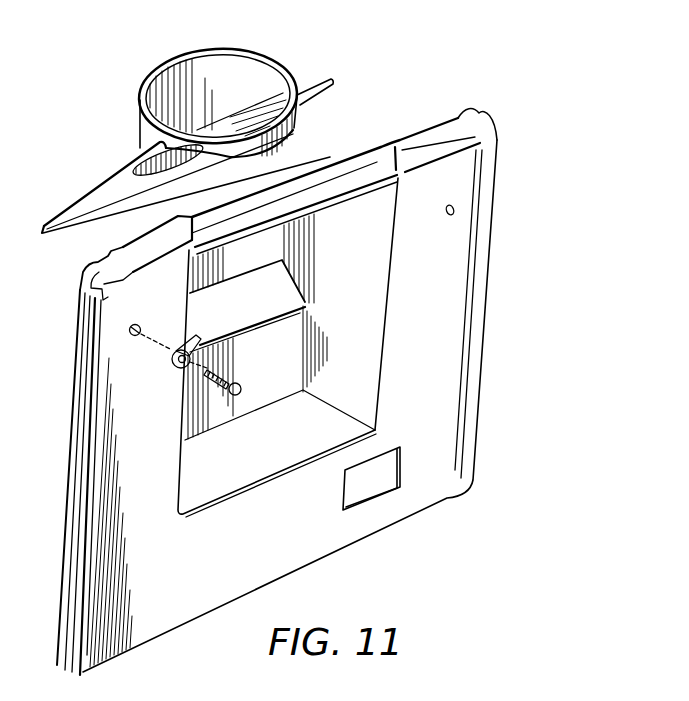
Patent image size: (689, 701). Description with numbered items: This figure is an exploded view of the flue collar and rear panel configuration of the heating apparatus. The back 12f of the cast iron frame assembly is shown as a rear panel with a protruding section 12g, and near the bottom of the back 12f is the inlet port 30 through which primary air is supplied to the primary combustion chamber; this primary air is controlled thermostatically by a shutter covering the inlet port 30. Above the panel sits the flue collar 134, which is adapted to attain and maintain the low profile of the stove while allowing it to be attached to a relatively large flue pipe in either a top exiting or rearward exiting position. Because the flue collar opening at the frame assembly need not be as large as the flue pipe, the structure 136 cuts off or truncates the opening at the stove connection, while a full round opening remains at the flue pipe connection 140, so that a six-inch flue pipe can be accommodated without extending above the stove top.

The flue pipe connection 140 is at (243, 50).
The flue collar 134 is at (331, 79).
The structure 136 is at (293, 131).
The protruding section 12g is at (356, 253).
The back 12f is at (481, 337).
The inlet port 30 is at (374, 494).